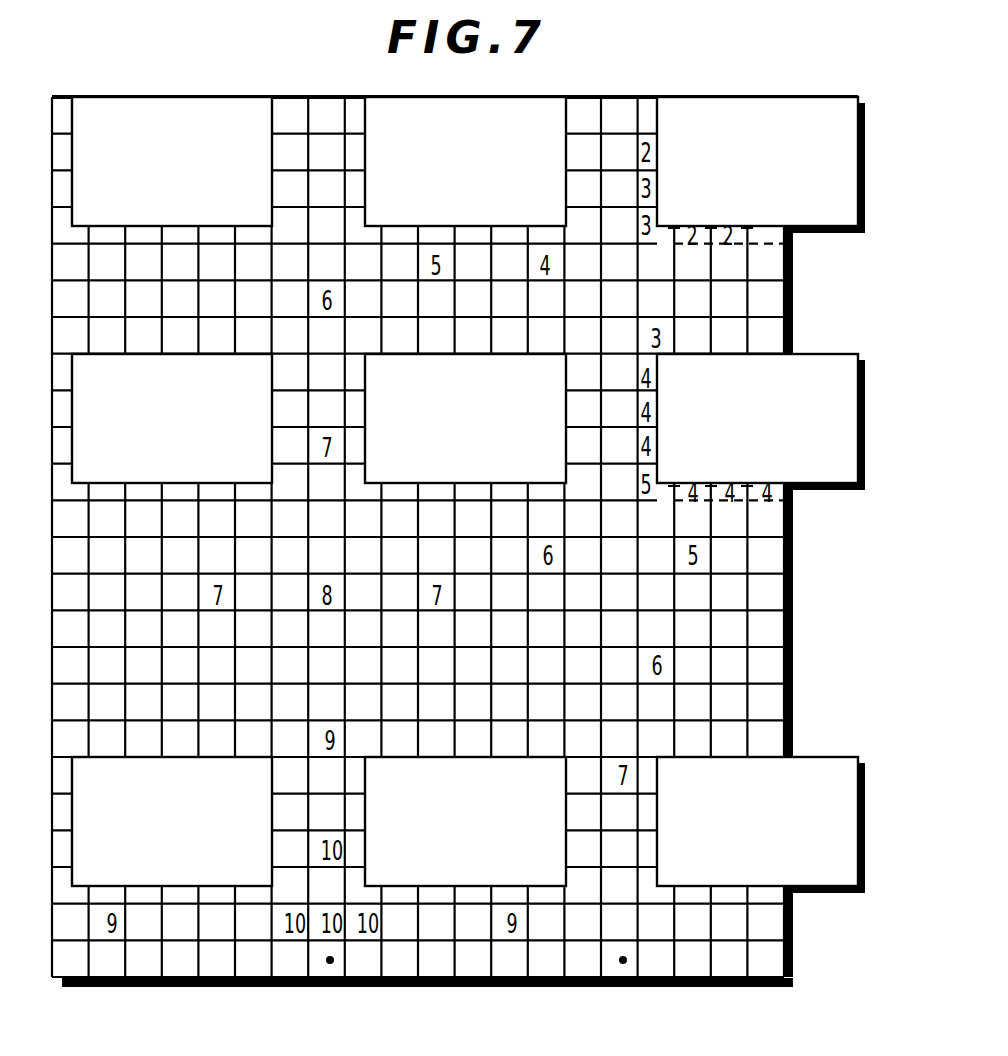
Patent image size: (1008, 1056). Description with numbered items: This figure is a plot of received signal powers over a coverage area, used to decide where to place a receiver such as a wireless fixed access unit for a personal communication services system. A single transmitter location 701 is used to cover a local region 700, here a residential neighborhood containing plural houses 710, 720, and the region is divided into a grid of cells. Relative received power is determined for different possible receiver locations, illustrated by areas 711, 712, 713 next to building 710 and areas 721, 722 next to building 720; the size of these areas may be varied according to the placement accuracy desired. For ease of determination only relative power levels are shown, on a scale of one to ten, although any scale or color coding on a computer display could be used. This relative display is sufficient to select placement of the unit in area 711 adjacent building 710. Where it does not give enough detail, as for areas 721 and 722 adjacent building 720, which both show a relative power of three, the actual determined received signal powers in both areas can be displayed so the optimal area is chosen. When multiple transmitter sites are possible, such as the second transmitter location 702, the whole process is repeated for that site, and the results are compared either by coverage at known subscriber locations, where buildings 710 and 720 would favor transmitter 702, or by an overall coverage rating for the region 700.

The local region 700 is at (368, 78).
The transmitter location 701 is at (336, 970).
The second transmitter location 702 is at (628, 970).
The house 710 is at (823, 490).
The area 711 is at (657, 477).
The area 712 is at (657, 437).
The area 713 is at (700, 482).
The house 720 is at (822, 235).
The area 721 is at (657, 218).
The area 722 is at (657, 178).